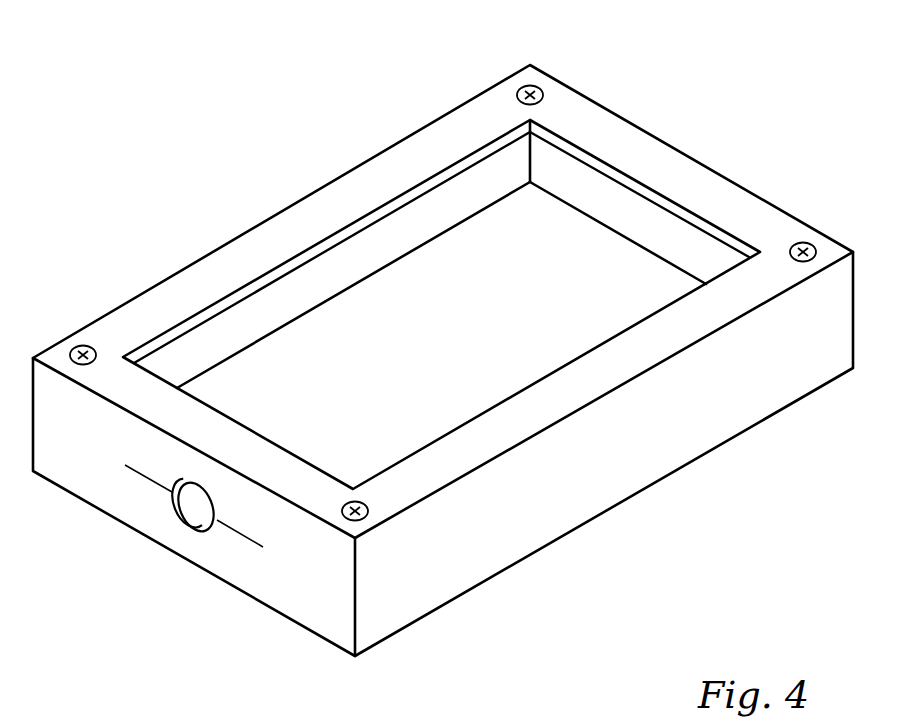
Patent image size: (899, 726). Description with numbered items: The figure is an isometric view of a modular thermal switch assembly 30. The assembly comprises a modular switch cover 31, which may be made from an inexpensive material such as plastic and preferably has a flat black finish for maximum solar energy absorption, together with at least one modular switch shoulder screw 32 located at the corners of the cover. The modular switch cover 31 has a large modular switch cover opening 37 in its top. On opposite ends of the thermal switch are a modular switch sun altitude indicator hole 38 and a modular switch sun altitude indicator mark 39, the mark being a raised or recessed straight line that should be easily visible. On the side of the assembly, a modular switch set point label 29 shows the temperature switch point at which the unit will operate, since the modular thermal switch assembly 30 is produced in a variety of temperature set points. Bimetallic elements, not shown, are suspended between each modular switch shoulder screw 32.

The modular switch set point label 29 is at (727, 400).
The modular thermal switch assembly 30 is at (679, 563).
The modular switch cover 31 is at (240, 236).
The modular switch shoulder screw 32 is at (541, 88).
The modular switch cover opening 37 is at (661, 196).
The modular switch sun altitude indicator hole 38 is at (190, 518).
The modular switch sun altitude indicator mark 39 is at (140, 473).